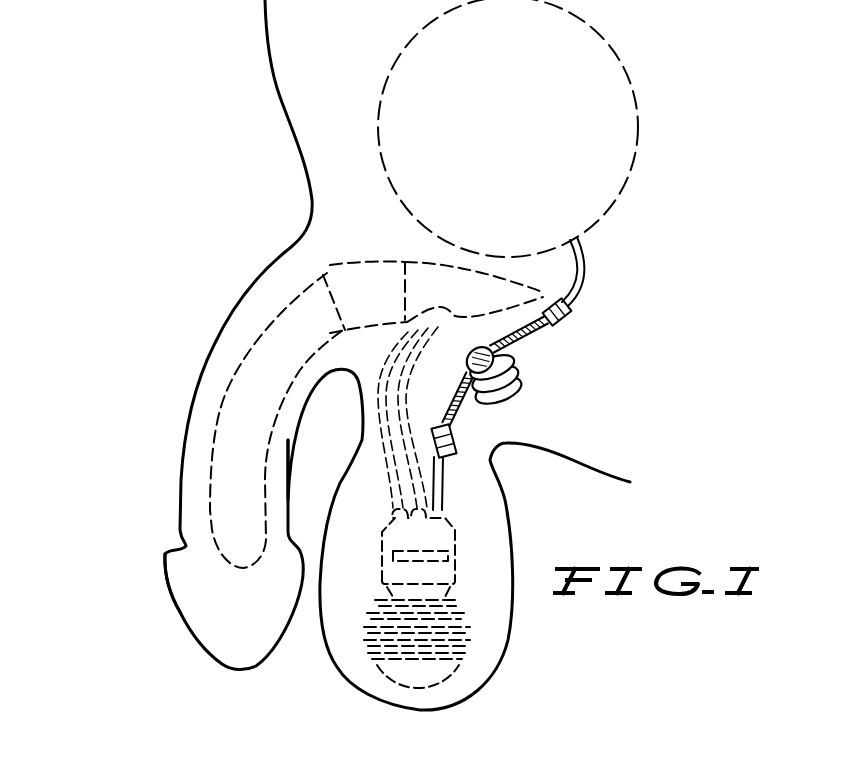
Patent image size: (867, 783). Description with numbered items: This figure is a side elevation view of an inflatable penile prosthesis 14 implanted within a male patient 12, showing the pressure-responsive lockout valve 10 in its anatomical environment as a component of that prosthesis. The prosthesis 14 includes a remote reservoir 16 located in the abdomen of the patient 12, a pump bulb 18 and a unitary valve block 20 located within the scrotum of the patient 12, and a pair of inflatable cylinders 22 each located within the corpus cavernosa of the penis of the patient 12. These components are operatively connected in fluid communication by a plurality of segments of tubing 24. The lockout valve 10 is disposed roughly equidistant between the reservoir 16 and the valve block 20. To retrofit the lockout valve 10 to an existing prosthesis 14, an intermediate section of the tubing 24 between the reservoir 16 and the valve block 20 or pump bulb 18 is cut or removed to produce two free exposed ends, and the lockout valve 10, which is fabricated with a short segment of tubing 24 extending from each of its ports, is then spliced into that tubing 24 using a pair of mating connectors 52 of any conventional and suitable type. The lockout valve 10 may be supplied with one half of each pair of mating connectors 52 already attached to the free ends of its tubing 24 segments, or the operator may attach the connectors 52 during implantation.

The lockout valve 10 is at (520, 380).
The male patient 12 is at (272, 92).
The inflatable penile prosthesis 14 is at (208, 484).
The remote reservoir 16 is at (640, 110).
The pump bulb 18 is at (450, 675).
The unitary valve block 20 is at (457, 533).
The inflatable cylinders 22 is at (220, 393).
The tubing 24 is at (588, 275).
The mating connectors 52 is at (565, 321).